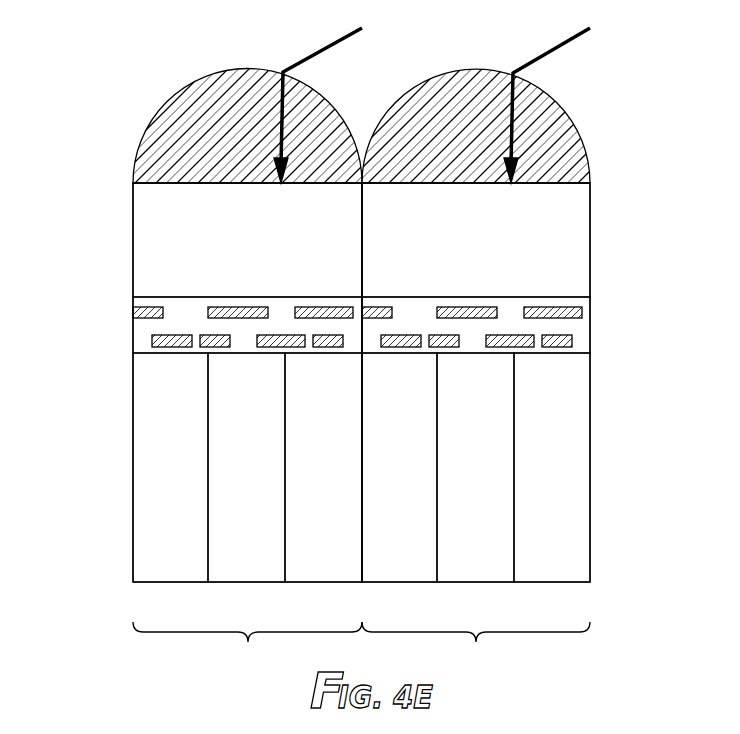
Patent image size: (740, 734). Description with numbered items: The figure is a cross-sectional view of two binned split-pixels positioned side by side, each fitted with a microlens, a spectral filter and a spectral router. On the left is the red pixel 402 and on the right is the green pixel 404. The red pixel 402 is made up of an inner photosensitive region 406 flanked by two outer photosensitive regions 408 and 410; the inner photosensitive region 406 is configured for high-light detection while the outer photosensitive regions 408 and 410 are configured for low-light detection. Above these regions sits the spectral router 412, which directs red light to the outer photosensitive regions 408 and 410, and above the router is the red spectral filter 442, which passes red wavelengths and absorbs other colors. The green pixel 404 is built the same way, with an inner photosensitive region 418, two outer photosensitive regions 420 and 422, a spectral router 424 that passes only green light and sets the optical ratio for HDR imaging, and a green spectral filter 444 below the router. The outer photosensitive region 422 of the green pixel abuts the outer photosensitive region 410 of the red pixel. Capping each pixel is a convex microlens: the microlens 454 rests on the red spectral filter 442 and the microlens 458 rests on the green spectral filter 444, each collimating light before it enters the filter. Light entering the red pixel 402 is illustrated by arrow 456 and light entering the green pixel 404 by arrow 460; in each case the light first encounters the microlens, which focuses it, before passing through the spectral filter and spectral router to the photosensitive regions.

The red pixel 402 is at (247, 425).
The green pixel 404 is at (476, 425).
The inner photosensitive region 406 is at (233, 420).
The outer photosensitive region 408 is at (160, 465).
The outer photosensitive region 410 is at (315, 567).
The spectral router 412 is at (147, 330).
The inner photosensitive region 418 is at (500, 403).
The outer photosensitive region 420 is at (563, 465).
The outer photosensitive region 422 is at (408, 565).
The spectral router 424 is at (578, 330).
The red spectral filter 442 is at (147, 228).
The green spectral filter 444 is at (578, 228).
The microlens 454 is at (165, 133).
The arrow 456 is at (308, 60).
The microlens 458 is at (573, 122).
The arrow 460 is at (548, 50).